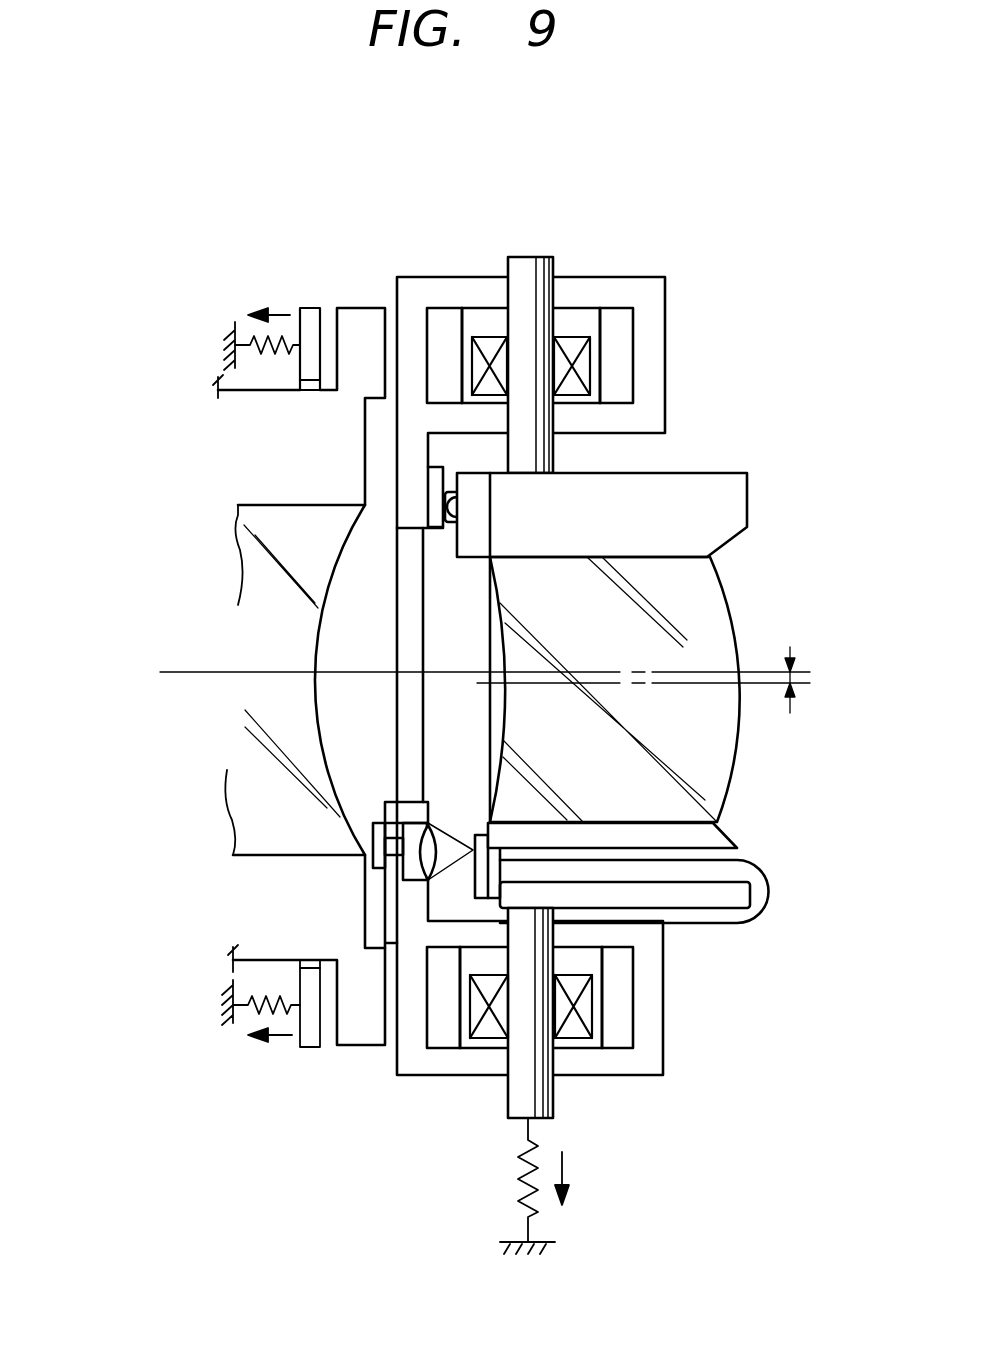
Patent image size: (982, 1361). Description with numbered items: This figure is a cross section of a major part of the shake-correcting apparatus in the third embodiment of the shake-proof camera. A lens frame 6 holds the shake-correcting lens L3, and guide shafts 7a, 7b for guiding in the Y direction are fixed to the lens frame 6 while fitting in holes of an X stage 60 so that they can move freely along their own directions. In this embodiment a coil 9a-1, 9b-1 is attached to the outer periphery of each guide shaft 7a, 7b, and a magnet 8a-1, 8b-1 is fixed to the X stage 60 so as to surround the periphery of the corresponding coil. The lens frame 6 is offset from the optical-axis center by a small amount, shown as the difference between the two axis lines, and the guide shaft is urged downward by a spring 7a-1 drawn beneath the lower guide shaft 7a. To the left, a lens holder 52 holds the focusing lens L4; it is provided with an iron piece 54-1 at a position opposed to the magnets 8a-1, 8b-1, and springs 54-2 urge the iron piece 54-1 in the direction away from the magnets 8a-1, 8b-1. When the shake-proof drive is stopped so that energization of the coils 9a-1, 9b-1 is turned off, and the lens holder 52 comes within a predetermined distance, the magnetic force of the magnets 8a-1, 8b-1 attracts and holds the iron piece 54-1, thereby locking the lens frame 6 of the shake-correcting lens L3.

The lens holder 52 is at (250, 436).
The iron piece 54-1 is at (310, 318).
The springs 54-2 is at (250, 335).
The X stage 60 is at (452, 272).
The guide shaft 7b is at (528, 257).
The guide shaft 7a is at (523, 1095).
The spring 7a-1 is at (515, 1180).
The coil 9b-1 is at (568, 347).
The coil 9a-1 is at (577, 1033).
The magnet 8b-1 is at (625, 342).
The magnet 8a-1 is at (625, 1025).
The lens frame 6 is at (725, 527).
The shake-correcting lens L3 is at (687, 773).
The focusing lens L4 is at (243, 545).